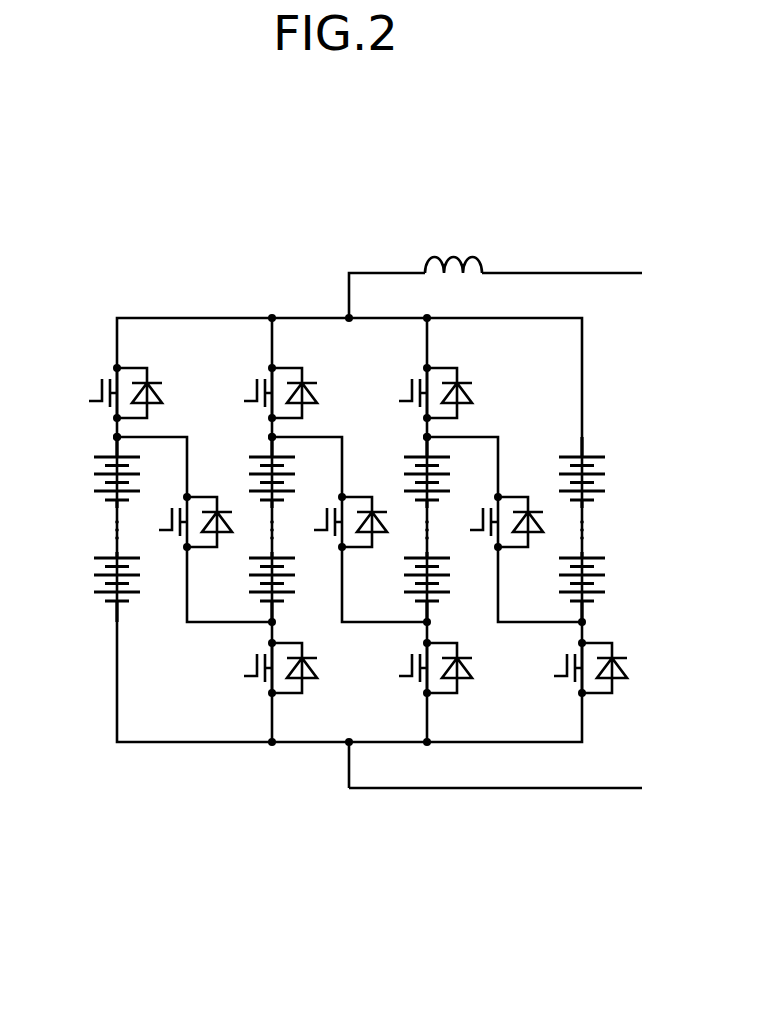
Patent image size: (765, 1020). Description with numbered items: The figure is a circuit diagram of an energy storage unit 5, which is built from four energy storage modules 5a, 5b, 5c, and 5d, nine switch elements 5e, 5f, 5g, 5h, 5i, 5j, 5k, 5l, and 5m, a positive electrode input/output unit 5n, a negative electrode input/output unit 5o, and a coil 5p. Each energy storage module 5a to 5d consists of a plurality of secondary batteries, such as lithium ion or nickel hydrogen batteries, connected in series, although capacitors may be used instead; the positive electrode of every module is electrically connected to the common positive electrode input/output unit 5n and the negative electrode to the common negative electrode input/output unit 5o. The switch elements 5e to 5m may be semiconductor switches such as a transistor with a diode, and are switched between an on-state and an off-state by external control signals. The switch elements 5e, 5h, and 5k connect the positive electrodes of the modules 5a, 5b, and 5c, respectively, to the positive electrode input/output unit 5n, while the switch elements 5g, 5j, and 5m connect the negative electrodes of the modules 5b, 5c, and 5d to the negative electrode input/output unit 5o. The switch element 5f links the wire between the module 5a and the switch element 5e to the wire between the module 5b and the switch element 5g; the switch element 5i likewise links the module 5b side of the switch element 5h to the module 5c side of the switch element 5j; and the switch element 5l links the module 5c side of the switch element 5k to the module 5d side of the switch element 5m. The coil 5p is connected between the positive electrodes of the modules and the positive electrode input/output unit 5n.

The energy storage unit 5 is at (400, 190).
The energy storage module 5a is at (95, 450).
The energy storage module 5b is at (250, 445).
The energy storage module 5c is at (407, 445).
The energy storage module 5d is at (561, 447).
The switch element 5e is at (93, 365).
The switch element 5f is at (217, 485).
The switch element 5g is at (232, 673).
The switch element 5h is at (316, 360).
The switch element 5i is at (373, 483).
The switch element 5j is at (387, 673).
The switch element 5k is at (467, 368).
The switch element 5l is at (528, 485).
The switch element 5m is at (543, 675).
The positive electrode input/output unit 5n is at (595, 268).
The negative electrode input/output unit 5o is at (595, 793).
The coil 5p is at (472, 247).